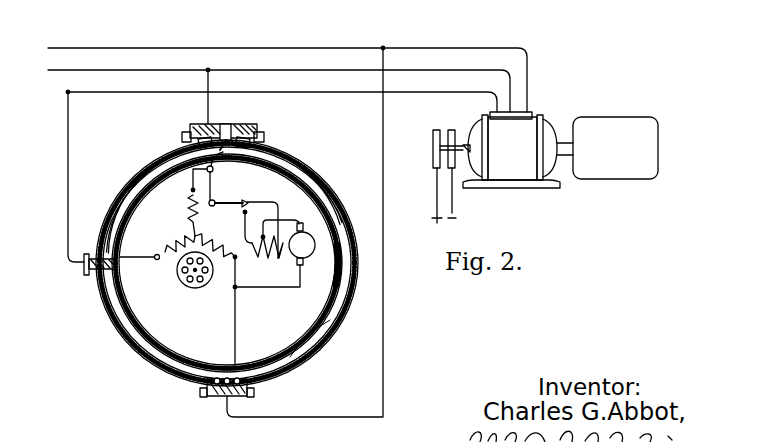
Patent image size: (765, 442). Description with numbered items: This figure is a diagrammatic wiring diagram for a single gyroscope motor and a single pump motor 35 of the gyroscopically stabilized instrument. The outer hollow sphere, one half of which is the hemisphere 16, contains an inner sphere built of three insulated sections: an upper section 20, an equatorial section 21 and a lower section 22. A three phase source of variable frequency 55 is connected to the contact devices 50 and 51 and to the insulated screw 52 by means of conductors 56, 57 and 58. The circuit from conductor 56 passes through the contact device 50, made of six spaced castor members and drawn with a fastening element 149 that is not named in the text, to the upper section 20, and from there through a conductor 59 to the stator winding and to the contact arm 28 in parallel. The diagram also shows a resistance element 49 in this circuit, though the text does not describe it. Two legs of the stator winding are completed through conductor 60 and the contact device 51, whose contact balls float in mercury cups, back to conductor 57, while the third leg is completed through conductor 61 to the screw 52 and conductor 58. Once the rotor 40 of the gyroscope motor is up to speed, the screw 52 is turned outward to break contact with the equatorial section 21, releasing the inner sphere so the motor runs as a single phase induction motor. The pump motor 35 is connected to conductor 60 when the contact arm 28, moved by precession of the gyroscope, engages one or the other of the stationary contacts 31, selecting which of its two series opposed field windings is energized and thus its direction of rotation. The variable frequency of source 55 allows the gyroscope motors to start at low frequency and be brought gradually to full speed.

The hemisphere 16 is at (333, 192).
The upper section 20 is at (310, 180).
The equatorial section 21 is at (340, 272).
The lower section 22 is at (308, 339).
The contact arm 28 is at (241, 201).
The stationary contacts 31 is at (248, 203).
The pump motor 35 is at (268, 256).
The rotor 40 is at (195, 288).
The resistor network 49 is at (191, 236).
The contact device 50 is at (258, 134).
The contact device 51 is at (246, 393).
The insulated screw 52 is at (84, 270).
The three phase source of variable frequency 55 is at (432, 92).
The conductor 56 is at (210, 110).
The conductor 57 is at (385, 352).
The conductor 58 is at (103, 202).
The conductor 59 is at (214, 168).
The conductor 60 is at (235, 340).
The conductor 61 is at (139, 259).
The bolt 149 is at (200, 130).